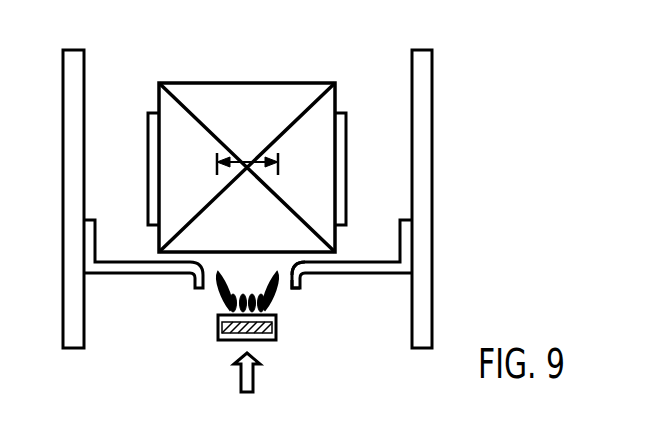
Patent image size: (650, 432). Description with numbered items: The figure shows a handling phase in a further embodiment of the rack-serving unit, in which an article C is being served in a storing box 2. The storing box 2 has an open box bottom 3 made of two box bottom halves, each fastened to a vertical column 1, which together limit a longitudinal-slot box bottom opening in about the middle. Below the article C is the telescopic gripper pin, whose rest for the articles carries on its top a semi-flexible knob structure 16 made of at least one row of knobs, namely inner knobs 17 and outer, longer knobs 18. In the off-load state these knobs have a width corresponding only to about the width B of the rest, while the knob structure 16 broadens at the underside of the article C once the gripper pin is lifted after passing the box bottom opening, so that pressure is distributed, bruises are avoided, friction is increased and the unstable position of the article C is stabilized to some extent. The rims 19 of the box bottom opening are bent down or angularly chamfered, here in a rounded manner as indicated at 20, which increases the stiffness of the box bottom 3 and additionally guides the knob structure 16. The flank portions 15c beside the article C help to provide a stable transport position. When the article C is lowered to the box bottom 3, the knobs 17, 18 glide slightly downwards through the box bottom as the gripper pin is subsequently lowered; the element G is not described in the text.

The vertical column 1 is at (425, 52).
The storing box 2 is at (392, 55).
The box bottom 3 is at (133, 274).
The flank portion 15c is at (146, 117).
The knob structure 16 is at (213, 310).
The inner knobs 17 is at (246, 300).
The outer knobs 18 is at (237, 300).
The rims of the box bottom opening 19 is at (292, 279).
The rounded chamfer 20 is at (292, 262).
The width of rest for the articles B is at (247, 150).
The article C is at (254, 82).
The gas G is at (275, 328).